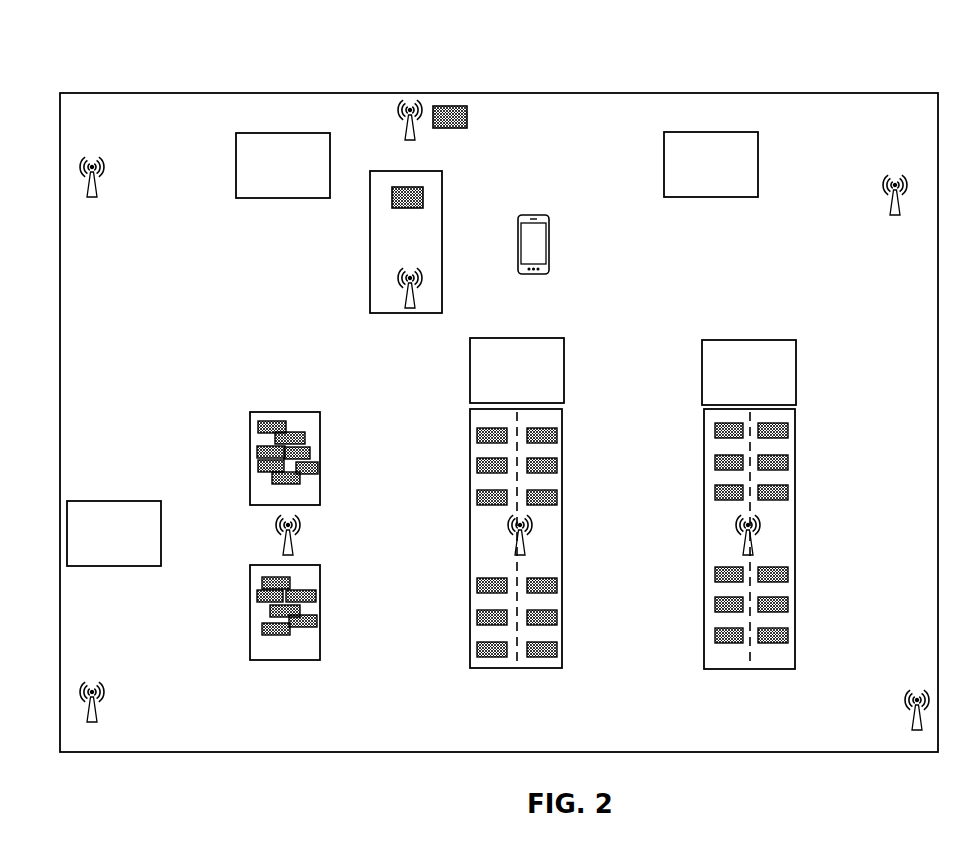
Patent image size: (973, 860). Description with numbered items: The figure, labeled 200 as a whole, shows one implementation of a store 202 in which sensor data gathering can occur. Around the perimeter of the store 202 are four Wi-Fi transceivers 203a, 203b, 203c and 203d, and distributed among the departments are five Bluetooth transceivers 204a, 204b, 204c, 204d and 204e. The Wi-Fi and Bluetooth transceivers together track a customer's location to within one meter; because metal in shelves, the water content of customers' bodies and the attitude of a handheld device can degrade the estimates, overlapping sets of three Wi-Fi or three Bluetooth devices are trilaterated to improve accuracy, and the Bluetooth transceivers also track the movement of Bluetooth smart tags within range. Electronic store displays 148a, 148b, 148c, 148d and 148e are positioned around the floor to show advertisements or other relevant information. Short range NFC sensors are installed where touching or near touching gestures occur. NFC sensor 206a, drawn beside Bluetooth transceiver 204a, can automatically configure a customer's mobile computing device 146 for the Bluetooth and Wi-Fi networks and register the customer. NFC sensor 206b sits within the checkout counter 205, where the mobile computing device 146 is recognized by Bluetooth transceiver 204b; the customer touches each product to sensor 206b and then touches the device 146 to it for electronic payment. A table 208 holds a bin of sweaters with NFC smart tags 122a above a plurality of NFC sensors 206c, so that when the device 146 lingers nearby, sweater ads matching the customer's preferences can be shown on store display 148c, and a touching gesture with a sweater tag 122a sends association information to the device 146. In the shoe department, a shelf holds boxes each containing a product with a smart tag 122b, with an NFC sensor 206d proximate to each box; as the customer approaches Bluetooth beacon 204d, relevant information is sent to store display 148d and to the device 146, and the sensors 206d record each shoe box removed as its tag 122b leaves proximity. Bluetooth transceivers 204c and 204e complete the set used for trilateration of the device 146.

The retail environment system 200 is at (949, 53).
The store 202 is at (183, 93).
The Wi-Fi transceiver 203a is at (94, 162).
The Wi-Fi transceiver 203b is at (895, 183).
The Wi-Fi transceiver 203c is at (94, 690).
The Wi-Fi transceiver 203d is at (912, 698).
The electronic store display 148a is at (268, 133).
The electronic store display 148b is at (696, 132).
The store display 148c is at (98, 501).
The store display 148d is at (500, 338).
The electronic store display 148e is at (732, 340).
The Bluetooth transceiver 204a is at (414, 122).
The Bluetooth transceiver 204b is at (408, 306).
The Bluetooth transceiver 204c is at (302, 523).
The Bluetooth beacon 204d is at (533, 527).
The Bluetooth transceiver 204e is at (762, 526).
The checkout counter 205 is at (370, 250).
The NFC sensor 206a is at (460, 119).
The NFC sensor 206b is at (421, 193).
The NFC sensors 206c is at (300, 493).
The NFC sensor 206d is at (508, 494).
The table 208 is at (298, 437).
The tagged products 122a is at (282, 450).
The product with smart tag 122b is at (488, 498).
The mobile computing device 146 is at (549, 241).